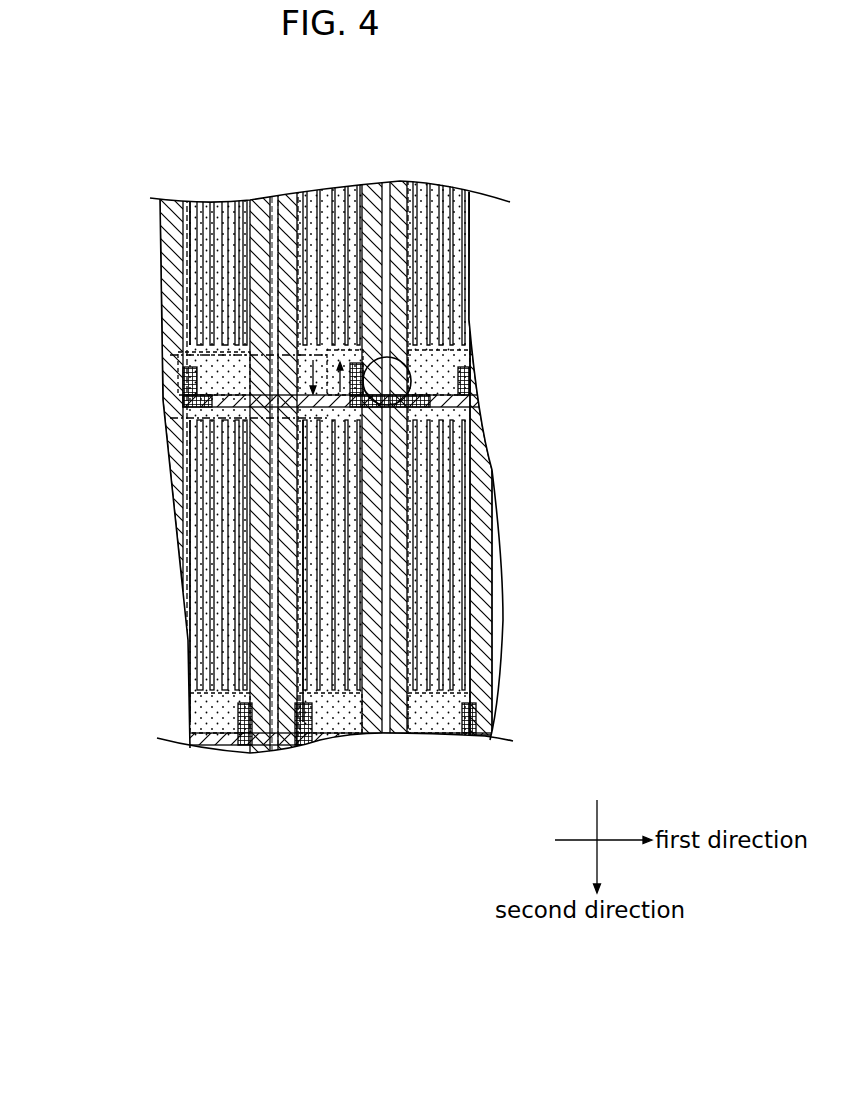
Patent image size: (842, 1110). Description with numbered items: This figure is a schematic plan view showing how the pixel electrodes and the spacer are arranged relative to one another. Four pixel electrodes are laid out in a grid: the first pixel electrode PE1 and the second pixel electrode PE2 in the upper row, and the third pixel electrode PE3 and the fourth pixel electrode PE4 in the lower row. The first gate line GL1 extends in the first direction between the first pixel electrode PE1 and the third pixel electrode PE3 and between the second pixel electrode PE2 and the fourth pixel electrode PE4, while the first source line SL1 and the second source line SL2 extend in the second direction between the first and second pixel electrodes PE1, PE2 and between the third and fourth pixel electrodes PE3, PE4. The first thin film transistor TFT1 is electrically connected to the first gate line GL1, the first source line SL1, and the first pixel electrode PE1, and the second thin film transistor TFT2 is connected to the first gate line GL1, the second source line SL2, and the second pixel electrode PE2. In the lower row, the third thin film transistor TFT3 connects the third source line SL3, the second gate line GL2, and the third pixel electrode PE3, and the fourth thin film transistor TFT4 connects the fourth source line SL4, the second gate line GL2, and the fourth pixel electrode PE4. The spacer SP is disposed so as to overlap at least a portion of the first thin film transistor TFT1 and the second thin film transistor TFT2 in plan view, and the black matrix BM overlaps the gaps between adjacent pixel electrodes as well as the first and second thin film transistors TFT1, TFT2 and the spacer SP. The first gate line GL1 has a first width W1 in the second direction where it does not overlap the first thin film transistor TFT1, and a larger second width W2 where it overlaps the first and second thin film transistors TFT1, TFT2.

The first source line SL1 is at (376, 200).
The second source line SL2 is at (395, 200).
The third source line SL3 is at (287, 205).
The fourth source line SL4 is at (480, 620).
The first gate line GL1 is at (470, 398).
The second gate line GL2 is at (200, 744).
The first pixel electrode PE1 is at (330, 203).
The second pixel electrode PE2 is at (455, 235).
The third pixel electrode PE3 is at (310, 518).
The fourth pixel electrode PE4 is at (460, 576).
The first thin film transistor TFT1 is at (350, 357).
The second thin film transistor TFT2 is at (433, 410).
The third thin film transistor TFT3 is at (287, 693).
The fourth thin film transistor TFT4 is at (480, 697).
The spacer SP is at (402, 358).
The black matrix BM is at (462, 510).
The first width W1 is at (243, 408).
The second width W2 is at (250, 400).